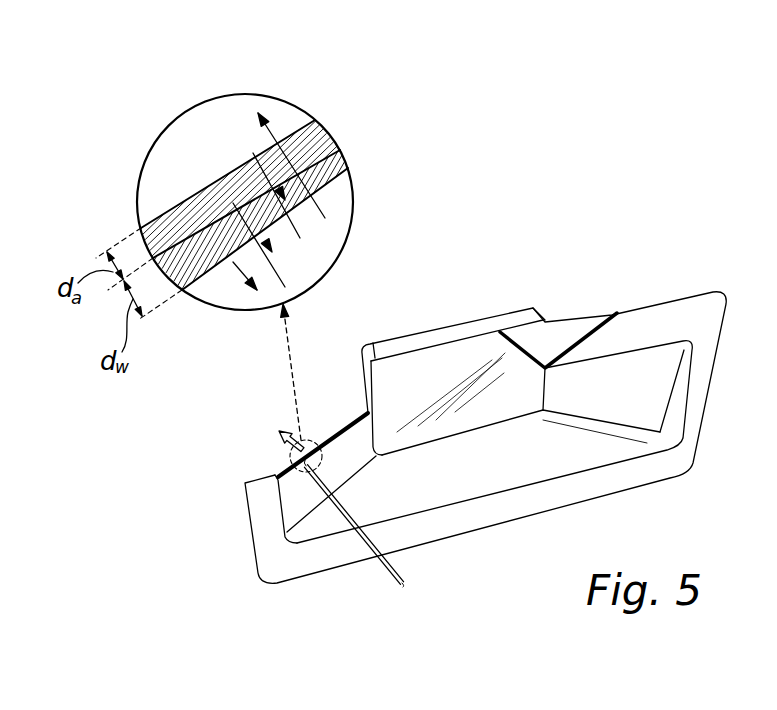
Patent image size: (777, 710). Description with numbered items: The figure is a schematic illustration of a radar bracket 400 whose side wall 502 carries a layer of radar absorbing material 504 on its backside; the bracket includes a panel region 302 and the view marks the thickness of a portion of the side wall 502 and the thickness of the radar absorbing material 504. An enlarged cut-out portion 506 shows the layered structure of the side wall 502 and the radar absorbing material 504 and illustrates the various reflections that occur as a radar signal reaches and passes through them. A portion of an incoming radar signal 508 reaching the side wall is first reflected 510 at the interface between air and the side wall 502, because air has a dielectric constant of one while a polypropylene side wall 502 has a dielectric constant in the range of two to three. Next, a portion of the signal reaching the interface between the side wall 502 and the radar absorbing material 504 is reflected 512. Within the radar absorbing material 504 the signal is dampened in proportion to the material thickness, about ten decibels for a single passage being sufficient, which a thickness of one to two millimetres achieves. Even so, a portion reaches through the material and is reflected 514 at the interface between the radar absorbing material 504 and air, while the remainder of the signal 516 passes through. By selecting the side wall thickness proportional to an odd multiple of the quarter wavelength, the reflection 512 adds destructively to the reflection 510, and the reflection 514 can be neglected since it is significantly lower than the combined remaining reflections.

The vehicle door pocket assembly 400 is at (670, 206).
The back panel 302 is at (493, 318).
The side wall 502 is at (345, 161).
The radar absorbing material 504 is at (327, 120).
The cut-out portion 506 is at (151, 143).
The incoming radar signal 508 is at (395, 578).
The reflection at air/side wall interface 510 is at (256, 291).
The reflection at side wall/absorber interface 512 is at (285, 287).
The reflection at absorber/air interface 514 is at (300, 238).
The remainder of the signal 516 is at (276, 112).